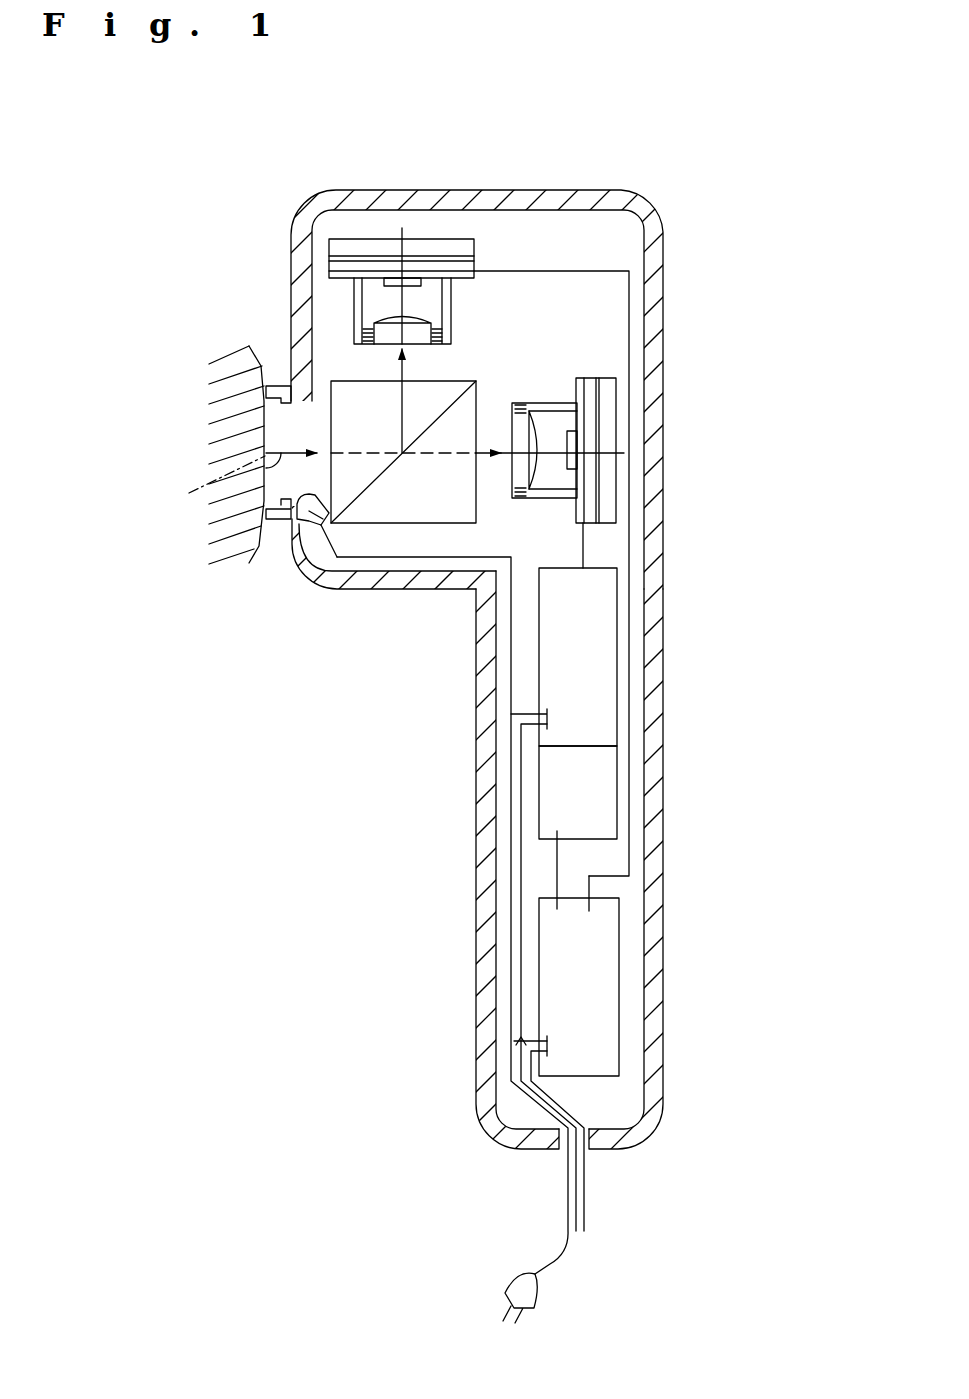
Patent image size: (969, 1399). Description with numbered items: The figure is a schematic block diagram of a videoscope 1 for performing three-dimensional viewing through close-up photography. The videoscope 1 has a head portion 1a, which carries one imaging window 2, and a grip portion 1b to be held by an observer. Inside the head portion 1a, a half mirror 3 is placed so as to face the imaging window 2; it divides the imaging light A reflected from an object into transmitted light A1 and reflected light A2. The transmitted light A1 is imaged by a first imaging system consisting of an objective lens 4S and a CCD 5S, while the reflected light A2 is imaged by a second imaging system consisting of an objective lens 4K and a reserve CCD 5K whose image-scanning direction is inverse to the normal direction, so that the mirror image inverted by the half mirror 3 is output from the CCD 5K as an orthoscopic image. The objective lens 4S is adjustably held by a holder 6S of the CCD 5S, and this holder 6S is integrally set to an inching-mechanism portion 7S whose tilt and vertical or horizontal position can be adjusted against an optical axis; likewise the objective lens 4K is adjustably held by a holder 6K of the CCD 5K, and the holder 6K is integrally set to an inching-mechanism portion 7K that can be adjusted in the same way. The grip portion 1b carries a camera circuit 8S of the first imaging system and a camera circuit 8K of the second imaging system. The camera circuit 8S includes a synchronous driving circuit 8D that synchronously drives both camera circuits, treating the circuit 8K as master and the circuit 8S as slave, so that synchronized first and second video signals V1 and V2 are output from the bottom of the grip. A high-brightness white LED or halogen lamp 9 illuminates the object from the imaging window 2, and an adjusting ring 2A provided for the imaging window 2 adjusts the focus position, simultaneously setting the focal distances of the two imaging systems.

The videoscope 1 is at (484, 703).
The head portion 1a is at (560, 198).
The grip portion 1b is at (488, 866).
The imaging window 2 is at (290, 392).
The adjusting ring 2A is at (272, 515).
The high-brightness white LED or halogen lamp 9 is at (297, 523).
The half mirror 3 is at (382, 470).
The imaging light A is at (315, 487).
The transmitted light A1 is at (486, 443).
The reflected light A2 is at (408, 366).
The objective lens 4K is at (392, 323).
The reserve imaging device (CCD) 5K is at (393, 280).
The holder 6K is at (357, 303).
The inching-mechanism portion 7K is at (452, 243).
The objective lens 4S is at (525, 432).
The CCD 5S is at (573, 460).
The holder 6S is at (552, 494).
The inching-mechanism portion 7S is at (607, 388).
The camera circuit 8S is at (600, 668).
The synchronous driving circuit 8D is at (595, 785).
The camera circuit 8K is at (595, 975).
The first video signal V1 is at (577, 1236).
The second video signal V2 is at (588, 1232).